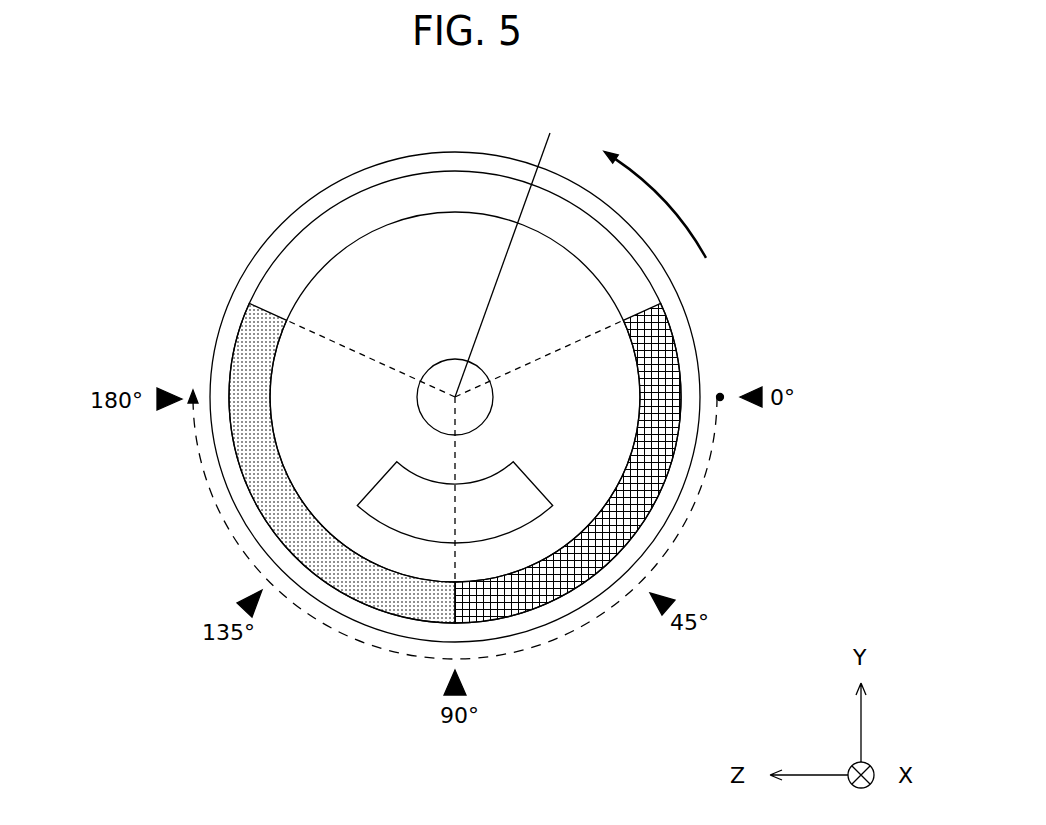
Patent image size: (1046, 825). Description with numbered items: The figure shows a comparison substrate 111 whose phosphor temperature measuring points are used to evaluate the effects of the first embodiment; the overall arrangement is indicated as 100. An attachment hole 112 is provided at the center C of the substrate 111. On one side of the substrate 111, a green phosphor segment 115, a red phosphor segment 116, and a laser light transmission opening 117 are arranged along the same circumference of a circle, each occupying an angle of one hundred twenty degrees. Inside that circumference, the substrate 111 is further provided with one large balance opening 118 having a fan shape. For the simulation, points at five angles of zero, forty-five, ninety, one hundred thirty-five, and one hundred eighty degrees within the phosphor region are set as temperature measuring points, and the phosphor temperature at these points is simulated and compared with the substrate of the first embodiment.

The rotary device / lens unit 100 is at (680, 129).
The substrate 111 is at (272, 232).
The attachment hole 112 is at (435, 365).
The green phosphor segment 115 is at (540, 600).
The red phosphor segment 116 is at (258, 465).
The laser light transmission opening 117 is at (455, 190).
The balance opening 118 is at (400, 535).